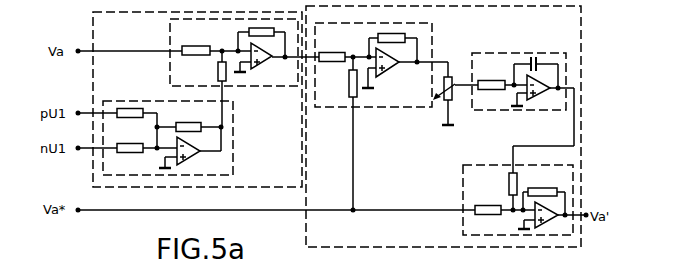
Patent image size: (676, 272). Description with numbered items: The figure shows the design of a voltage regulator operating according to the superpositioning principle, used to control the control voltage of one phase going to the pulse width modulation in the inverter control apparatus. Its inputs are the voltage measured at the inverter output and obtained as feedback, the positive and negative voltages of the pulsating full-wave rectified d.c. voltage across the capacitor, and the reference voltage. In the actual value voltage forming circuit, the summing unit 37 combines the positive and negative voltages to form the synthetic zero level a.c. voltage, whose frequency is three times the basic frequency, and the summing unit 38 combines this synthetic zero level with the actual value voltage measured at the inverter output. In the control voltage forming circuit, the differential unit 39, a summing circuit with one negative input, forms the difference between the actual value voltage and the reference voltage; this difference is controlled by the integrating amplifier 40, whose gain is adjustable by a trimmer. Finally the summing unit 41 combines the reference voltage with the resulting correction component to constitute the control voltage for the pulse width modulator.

The summing unit 37 is at (233, 146).
The summing unit 38 is at (170, 77).
The differential unit 39 is at (426, 107).
The integrating amplifier 40 is at (526, 111).
The summing unit 41 is at (463, 185).